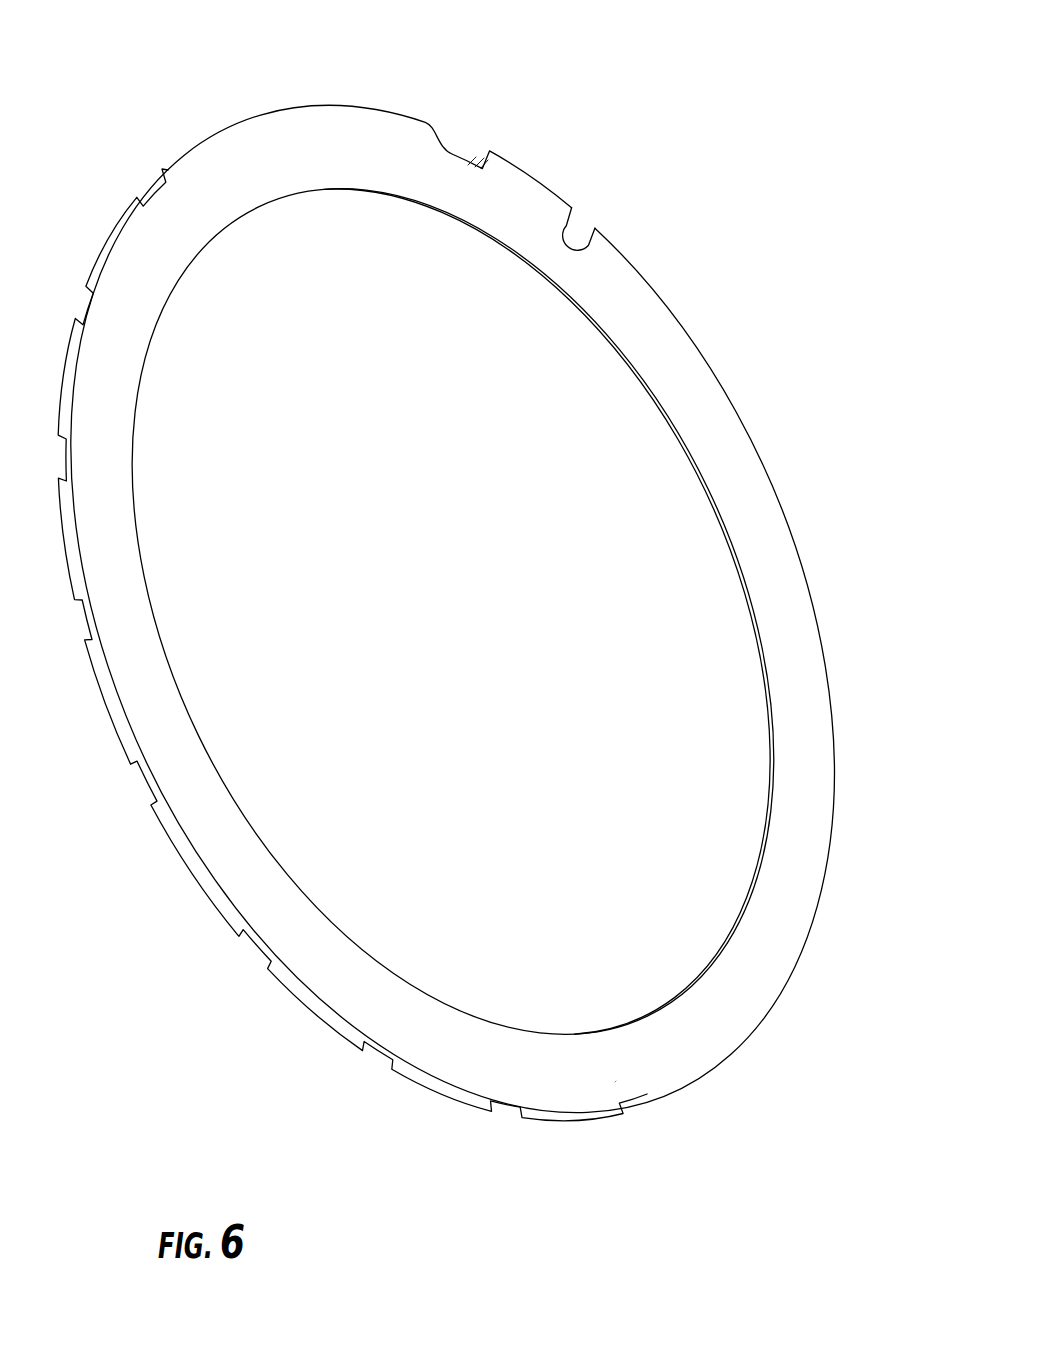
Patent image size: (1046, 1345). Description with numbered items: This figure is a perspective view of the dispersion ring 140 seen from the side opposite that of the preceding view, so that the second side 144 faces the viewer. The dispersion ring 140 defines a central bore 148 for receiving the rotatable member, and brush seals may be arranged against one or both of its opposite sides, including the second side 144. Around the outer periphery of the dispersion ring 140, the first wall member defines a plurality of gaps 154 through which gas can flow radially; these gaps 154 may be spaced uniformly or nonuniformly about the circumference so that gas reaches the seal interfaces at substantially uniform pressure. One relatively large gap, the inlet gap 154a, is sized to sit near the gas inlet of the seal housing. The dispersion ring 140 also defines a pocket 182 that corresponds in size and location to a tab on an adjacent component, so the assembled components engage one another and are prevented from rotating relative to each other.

The dispersion ring 140 is at (456, 630).
The second side 144 is at (615, 1082).
The bore 148 is at (638, 872).
The gaps 154 is at (368, 1064).
The inlet gap 154a is at (456, 131).
The pocket 182 is at (584, 213).